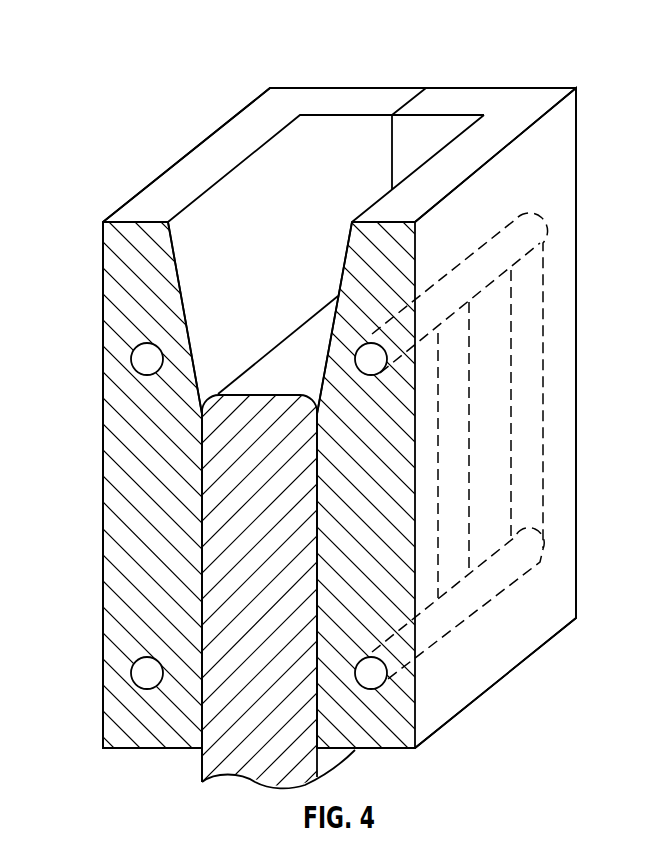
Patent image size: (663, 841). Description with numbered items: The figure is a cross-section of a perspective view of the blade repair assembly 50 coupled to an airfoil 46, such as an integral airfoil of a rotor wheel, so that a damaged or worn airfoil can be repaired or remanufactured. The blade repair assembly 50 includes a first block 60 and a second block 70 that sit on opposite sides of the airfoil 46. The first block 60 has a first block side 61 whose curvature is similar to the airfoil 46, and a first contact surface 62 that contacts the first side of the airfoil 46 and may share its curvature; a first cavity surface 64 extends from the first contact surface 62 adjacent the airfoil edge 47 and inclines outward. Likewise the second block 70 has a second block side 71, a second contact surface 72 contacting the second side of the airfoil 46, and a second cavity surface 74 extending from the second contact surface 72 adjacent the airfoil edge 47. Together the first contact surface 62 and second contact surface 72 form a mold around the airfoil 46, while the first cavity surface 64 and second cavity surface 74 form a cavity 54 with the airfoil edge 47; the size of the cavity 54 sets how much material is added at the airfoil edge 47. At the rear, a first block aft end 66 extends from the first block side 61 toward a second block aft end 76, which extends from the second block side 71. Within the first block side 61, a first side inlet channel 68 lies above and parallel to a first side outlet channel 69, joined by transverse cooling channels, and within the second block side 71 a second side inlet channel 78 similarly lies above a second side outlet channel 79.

The blade repair assembly 50 is at (98, 38).
The airfoil 46 is at (215, 750).
The airfoil edge 47 is at (252, 393).
The cavity 54 is at (257, 247).
The first block 60 is at (274, 92).
The first block side 61 is at (117, 578).
The first contact surface 62 is at (205, 457).
The first cavity surface 64 is at (176, 245).
The first block aft end 66 is at (357, 97).
The first side inlet channel 68 is at (143, 361).
The first side outlet channel 69 is at (145, 673).
The second block 70 is at (570, 88).
The second block side 71 is at (513, 643).
The second contact surface 72 is at (315, 545).
The second cavity surface 74 is at (346, 245).
The second block aft end 76 is at (474, 98).
The second side inlet channel 78 is at (387, 358).
The second side outlet channel 79 is at (380, 670).